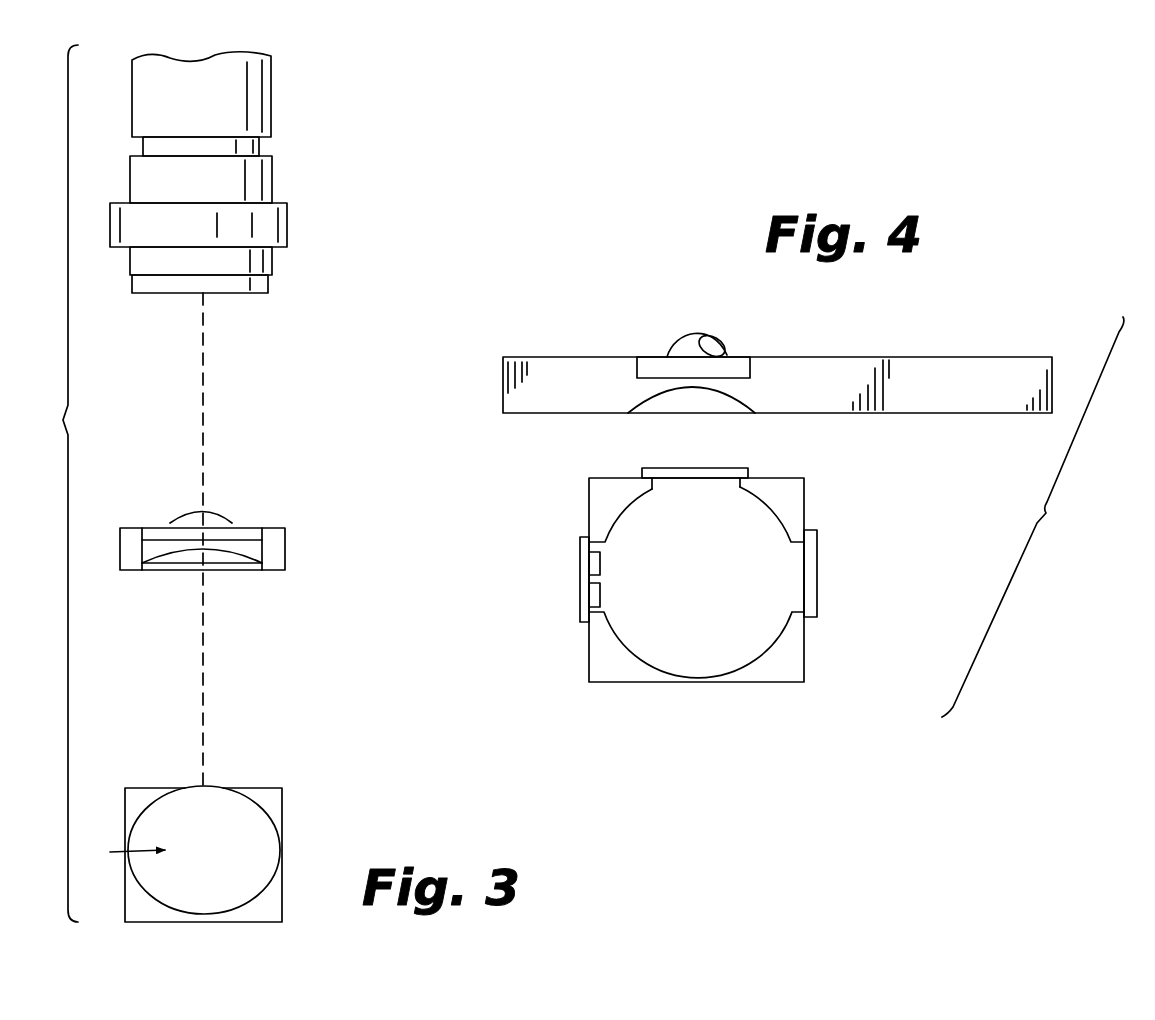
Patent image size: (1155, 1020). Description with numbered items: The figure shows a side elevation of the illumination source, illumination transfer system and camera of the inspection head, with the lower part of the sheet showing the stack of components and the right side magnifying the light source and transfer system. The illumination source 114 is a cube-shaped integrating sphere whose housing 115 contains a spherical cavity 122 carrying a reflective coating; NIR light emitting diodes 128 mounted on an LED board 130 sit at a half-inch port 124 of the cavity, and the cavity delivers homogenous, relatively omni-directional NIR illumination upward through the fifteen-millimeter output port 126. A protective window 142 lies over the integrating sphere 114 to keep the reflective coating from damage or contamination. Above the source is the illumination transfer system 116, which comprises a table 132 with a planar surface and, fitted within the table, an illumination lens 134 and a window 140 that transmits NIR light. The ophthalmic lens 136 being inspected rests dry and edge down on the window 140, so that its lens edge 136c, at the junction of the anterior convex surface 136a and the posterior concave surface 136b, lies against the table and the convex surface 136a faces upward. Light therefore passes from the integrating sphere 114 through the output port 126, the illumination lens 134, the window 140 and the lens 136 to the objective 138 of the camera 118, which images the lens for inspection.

In FIG. 3, the illumination source 114 is at (287, 807).
In FIG. 4, the illumination source 114 is at (598, 503).
In FIG. 3, the housing 115 is at (282, 847).
In FIG. 3, the illumination transfer system 116 is at (287, 552).
In FIG. 4, the illumination transfer system 116 is at (501, 372).
In FIG. 3, the camera 118 is at (271, 112).
In FIG. 3, the spherical cavity 122 is at (148, 803).
In FIG. 3, the port 124 is at (128, 842).
In FIG. 3, the output port 126 is at (212, 783).
In FIG. 4, the NIR light emitting diodes 128 is at (600, 565).
In FIG. 4, the LED board 130 is at (580, 603).
In FIG. 3, the table 132 is at (275, 572).
In FIG. 4, the table 132 is at (503, 403).
In FIG. 3, the illumination lens 134 is at (175, 560).
In FIG. 4, the illumination lens 134 is at (717, 400).
In FIG. 3, the lens 136 is at (180, 522).
In FIG. 4, the lens 136 is at (720, 345).
In FIG. 4, the anterior convex surface 136a is at (667, 353).
In FIG. 4, the posterior concave surface 136b is at (728, 355).
In FIG. 4, the lens edge 136c is at (680, 347).
In FIG. 3, the objective 138 is at (287, 213).
In FIG. 3, the window 140 is at (247, 530).
In FIG. 4, the window 140 is at (652, 363).
In FIG. 4, the protective window 142 is at (741, 473).